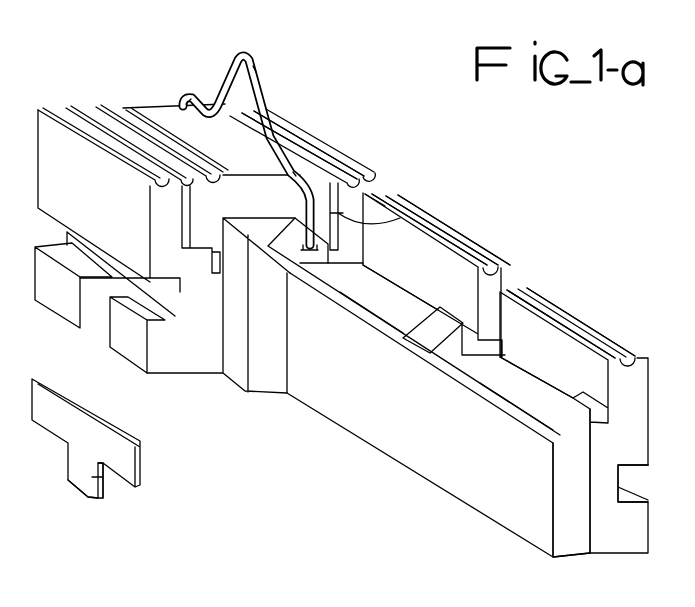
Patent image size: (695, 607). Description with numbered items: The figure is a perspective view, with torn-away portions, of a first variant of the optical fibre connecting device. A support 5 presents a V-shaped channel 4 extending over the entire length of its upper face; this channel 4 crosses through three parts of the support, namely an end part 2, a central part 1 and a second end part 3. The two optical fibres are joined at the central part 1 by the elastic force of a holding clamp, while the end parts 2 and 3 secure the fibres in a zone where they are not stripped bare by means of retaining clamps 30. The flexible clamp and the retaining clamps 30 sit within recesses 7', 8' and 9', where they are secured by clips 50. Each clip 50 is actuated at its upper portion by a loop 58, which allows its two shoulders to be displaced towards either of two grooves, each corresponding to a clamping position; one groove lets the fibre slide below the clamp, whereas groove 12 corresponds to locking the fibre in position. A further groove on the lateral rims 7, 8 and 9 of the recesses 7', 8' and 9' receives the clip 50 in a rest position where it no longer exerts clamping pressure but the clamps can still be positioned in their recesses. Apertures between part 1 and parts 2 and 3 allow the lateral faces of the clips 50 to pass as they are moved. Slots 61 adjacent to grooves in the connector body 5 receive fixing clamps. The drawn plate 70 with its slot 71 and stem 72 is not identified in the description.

The central part 1 is at (452, 232).
The end part 2 is at (320, 134).
The second end part 3 is at (586, 327).
The V-shaped channel 4 is at (395, 335).
The support 5 is at (456, 486).
The lateral rim 7 is at (400, 287).
The recess 7' is at (371, 321).
The lateral rim 8 is at (383, 173).
The recess 8' is at (442, 220).
The lateral rim 9 is at (536, 380).
The recess 9' is at (506, 406).
The groove 12 is at (120, 105).
The retaining clamp 30 is at (163, 116).
The clip 50 is at (240, 57).
The loop 58 is at (256, 66).
The slot 61 is at (95, 318).
The plate 70 is at (108, 438).
The slot 71 is at (102, 478).
The plate stem 72 is at (76, 498).